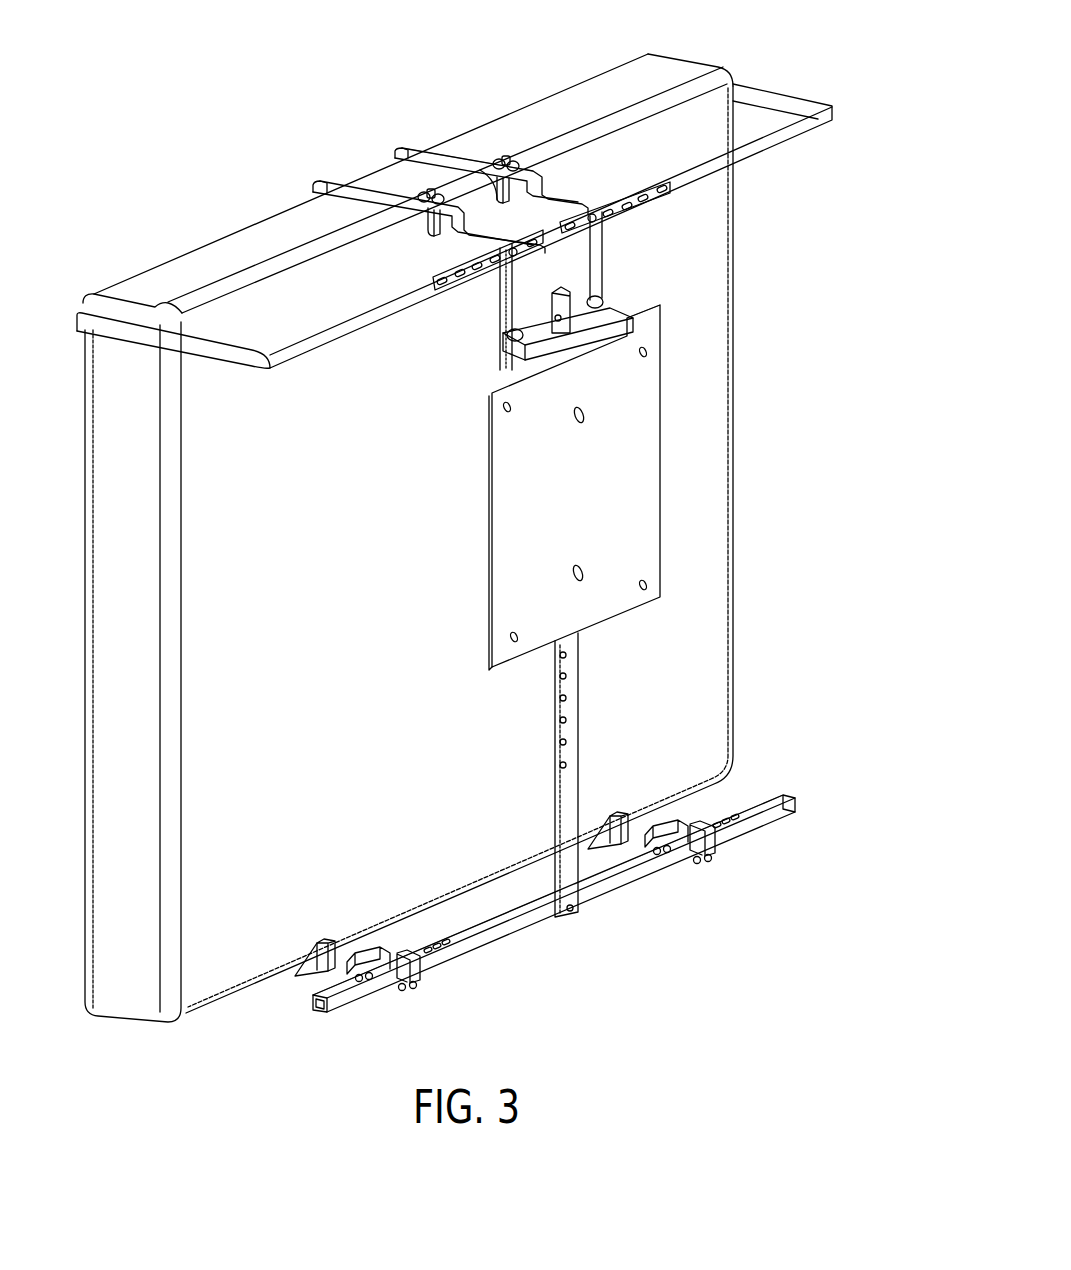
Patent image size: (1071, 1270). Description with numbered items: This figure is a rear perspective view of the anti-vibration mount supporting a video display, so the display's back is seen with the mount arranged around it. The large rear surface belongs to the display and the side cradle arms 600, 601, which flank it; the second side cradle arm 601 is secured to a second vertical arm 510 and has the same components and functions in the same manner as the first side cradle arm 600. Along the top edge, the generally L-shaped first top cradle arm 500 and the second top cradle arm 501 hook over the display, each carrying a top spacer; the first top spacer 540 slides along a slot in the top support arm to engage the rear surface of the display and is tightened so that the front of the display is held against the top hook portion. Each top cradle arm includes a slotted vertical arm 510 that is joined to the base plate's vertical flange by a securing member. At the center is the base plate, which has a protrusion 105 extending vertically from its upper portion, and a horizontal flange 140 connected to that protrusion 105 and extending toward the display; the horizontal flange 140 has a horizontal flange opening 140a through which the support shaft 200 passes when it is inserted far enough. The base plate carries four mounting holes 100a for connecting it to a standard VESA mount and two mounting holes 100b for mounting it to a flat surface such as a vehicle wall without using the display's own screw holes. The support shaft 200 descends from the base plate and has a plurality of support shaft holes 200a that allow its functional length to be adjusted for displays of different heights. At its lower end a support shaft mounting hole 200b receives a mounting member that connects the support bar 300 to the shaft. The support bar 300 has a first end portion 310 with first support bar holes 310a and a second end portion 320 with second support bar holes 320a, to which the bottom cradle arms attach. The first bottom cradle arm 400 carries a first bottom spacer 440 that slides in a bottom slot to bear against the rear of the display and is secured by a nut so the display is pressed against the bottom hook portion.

The first side cradle arm 600 is at (217, 368).
The second side cradle arm 601 is at (840, 101).
The first top cradle arm 500 is at (305, 192).
The second top cradle arm 501 is at (420, 138).
The first top spacer 540 is at (426, 226).
The first vertical arm 510 is at (593, 259).
The horizontal flange 140 is at (603, 310).
The horizontal flange opening 140a is at (612, 319).
The protrusion 105 is at (580, 356).
The mounting holes 100a is at (643, 356).
The mounting holes 100b is at (581, 420).
The support shaft 200 is at (598, 805).
The support shaft holes 200a is at (558, 698).
The support shaft mounting hole 200b is at (564, 932).
The support bar 300 is at (657, 887).
The first end portion 310 is at (384, 1012).
The second end portion 320 is at (803, 815).
The first support bar holes 310a is at (363, 978).
The second support bar holes 320a is at (668, 849).
The first bottom cradle arm 400 is at (288, 985).
The first bottom spacer 440 is at (318, 961).